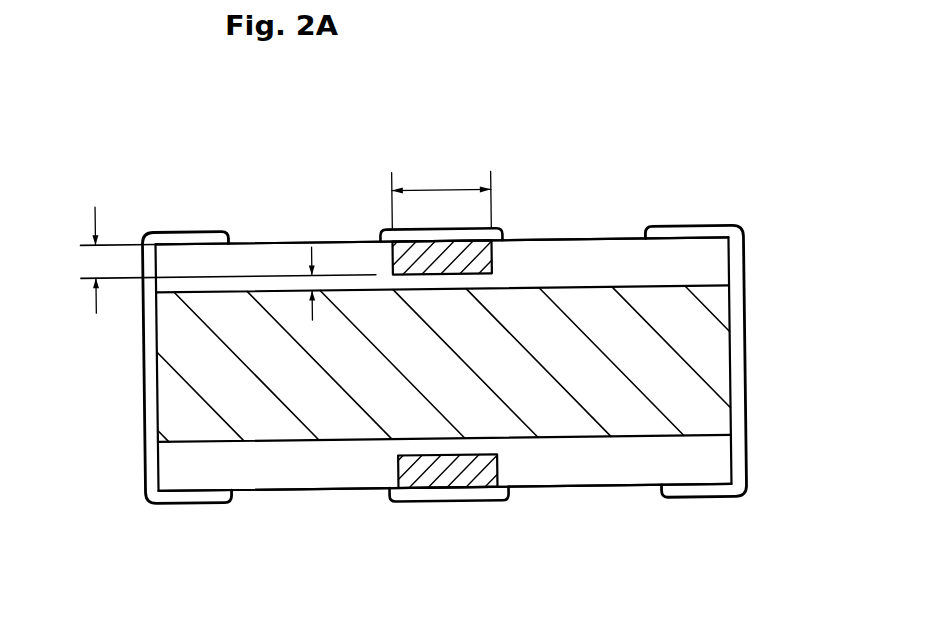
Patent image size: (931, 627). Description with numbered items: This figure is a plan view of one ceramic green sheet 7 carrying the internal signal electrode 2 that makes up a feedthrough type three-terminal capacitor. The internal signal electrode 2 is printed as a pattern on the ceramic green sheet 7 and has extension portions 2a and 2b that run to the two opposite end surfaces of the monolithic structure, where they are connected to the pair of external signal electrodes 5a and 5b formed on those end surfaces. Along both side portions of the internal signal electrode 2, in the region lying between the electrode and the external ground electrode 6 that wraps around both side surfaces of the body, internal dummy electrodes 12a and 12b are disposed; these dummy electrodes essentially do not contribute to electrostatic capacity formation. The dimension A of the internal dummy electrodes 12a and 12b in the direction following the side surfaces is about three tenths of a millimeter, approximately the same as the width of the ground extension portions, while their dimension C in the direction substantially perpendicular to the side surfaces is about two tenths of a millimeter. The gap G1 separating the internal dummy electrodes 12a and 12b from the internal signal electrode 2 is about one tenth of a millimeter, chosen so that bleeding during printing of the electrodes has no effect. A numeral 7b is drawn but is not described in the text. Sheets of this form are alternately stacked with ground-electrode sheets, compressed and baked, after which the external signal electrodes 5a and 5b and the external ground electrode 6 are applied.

The internal signal electrode 2 is at (598, 286).
The extension portion of internal signal electrode 2a is at (208, 440).
The extension portion of internal signal electrode 2b is at (705, 288).
The external signal electrode 5a is at (143, 368).
The external signal electrode 5b is at (745, 356).
The external ground electrode 6 is at (445, 502).
The ceramic green sheet 7 is at (268, 237).
The upper conductive film 7b is at (441, 234).
The internal dummy electrode 12a is at (497, 259).
The internal dummy electrode 12b is at (497, 464).
The dimension of internal dummy electrodes A is at (441, 193).
The dimension of internal dummy electrodes C is at (95, 258).
The gap G1 is at (316, 286).